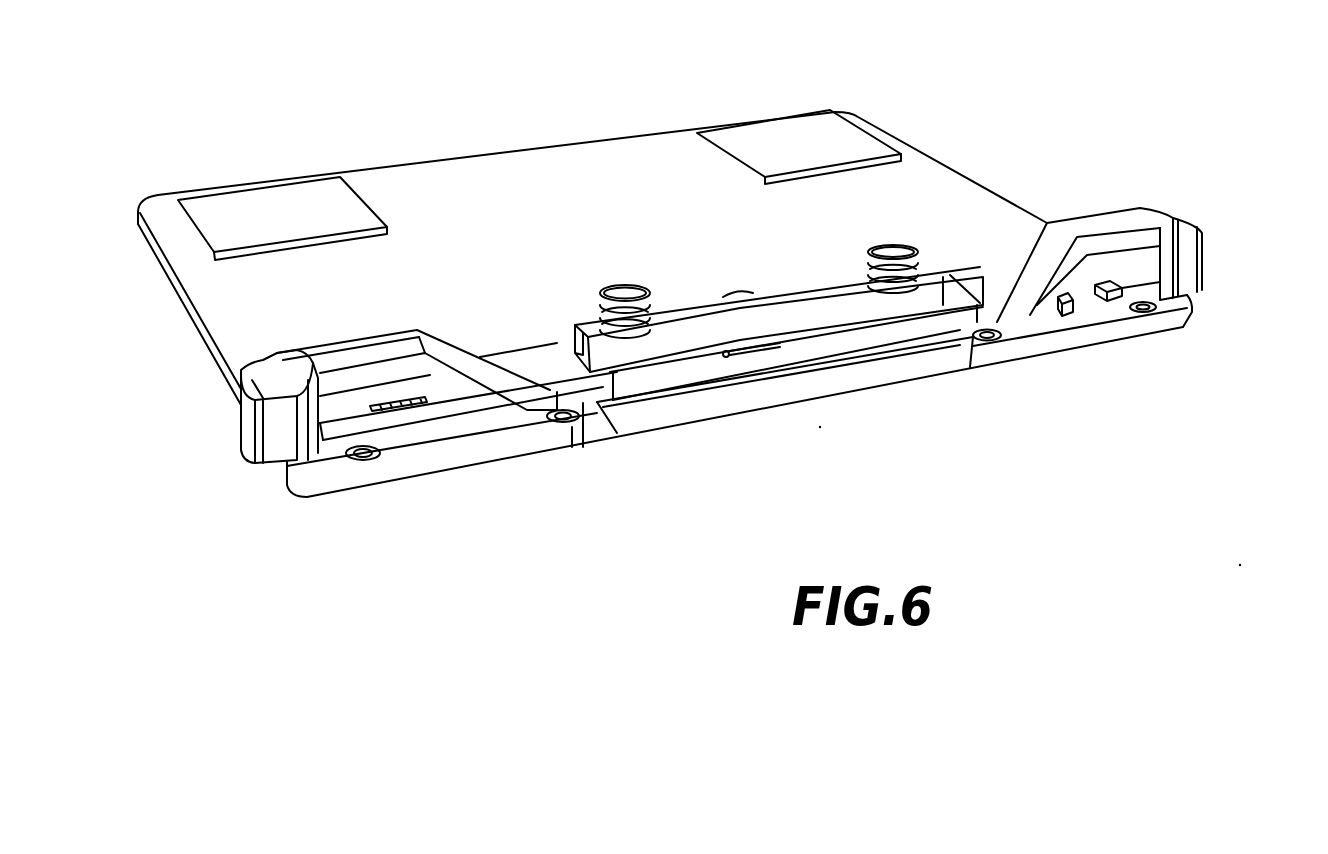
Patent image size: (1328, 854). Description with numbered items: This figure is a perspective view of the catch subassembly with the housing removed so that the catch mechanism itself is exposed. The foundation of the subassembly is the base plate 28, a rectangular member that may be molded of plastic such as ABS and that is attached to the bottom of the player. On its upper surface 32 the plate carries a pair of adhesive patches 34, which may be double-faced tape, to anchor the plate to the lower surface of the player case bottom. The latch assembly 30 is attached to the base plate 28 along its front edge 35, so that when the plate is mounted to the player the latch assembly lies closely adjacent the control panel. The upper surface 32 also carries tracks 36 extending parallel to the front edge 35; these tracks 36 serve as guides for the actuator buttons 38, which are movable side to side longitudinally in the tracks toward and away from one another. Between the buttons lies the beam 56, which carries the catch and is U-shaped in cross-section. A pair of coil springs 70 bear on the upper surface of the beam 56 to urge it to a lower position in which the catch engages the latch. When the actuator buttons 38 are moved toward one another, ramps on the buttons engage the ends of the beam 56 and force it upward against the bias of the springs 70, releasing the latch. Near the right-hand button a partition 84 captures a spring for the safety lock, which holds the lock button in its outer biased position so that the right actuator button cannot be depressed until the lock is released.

The base plate 28 is at (957, 170).
The latch assembly 30 is at (905, 396).
The upper surface 32 is at (603, 216).
The adhesive patches 34 is at (293, 207).
The front edge 35 is at (493, 470).
The tracks 36 is at (431, 418).
The actuator buttons 38 is at (238, 412).
The beam 56 is at (767, 325).
The coil springs 70 is at (592, 295).
The partition 84 is at (1097, 296).